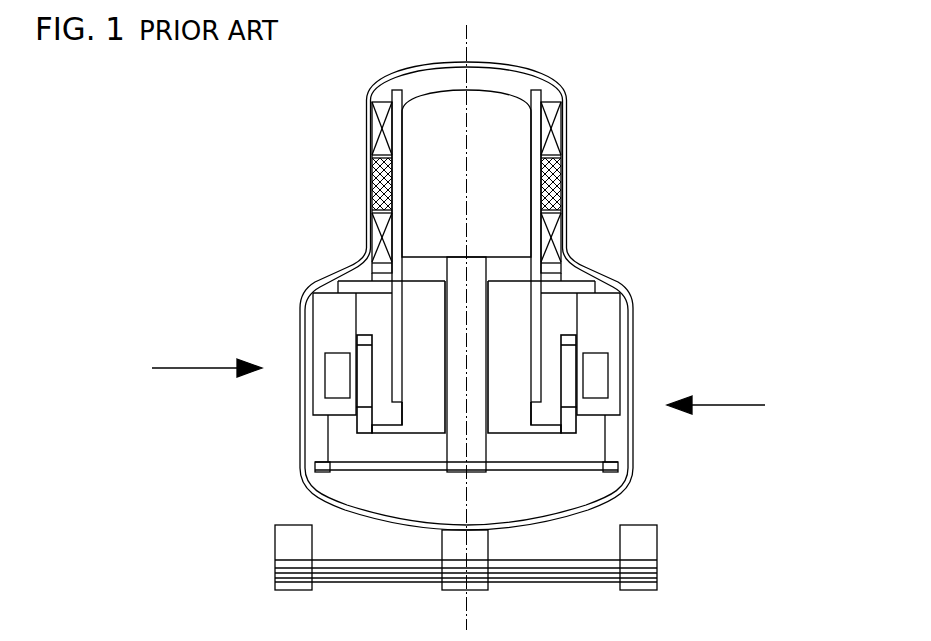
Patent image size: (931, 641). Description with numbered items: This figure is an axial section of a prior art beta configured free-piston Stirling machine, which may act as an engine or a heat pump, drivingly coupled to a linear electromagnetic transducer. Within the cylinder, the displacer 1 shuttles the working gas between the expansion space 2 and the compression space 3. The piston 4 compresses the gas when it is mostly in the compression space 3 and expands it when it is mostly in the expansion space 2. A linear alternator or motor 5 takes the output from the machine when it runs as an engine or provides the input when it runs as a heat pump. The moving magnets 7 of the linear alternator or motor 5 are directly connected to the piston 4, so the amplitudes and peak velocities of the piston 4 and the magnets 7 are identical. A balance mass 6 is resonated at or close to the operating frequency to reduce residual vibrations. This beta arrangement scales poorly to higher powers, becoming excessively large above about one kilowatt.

The displacer 1 is at (507, 188).
The expansion space 2 is at (503, 82).
The compression space 3 is at (513, 267).
The piston 4 is at (507, 343).
The linear alternator or motor 5 is at (461, 387).
The balance mass 6 is at (647, 572).
The moving magnets 7 is at (368, 366).